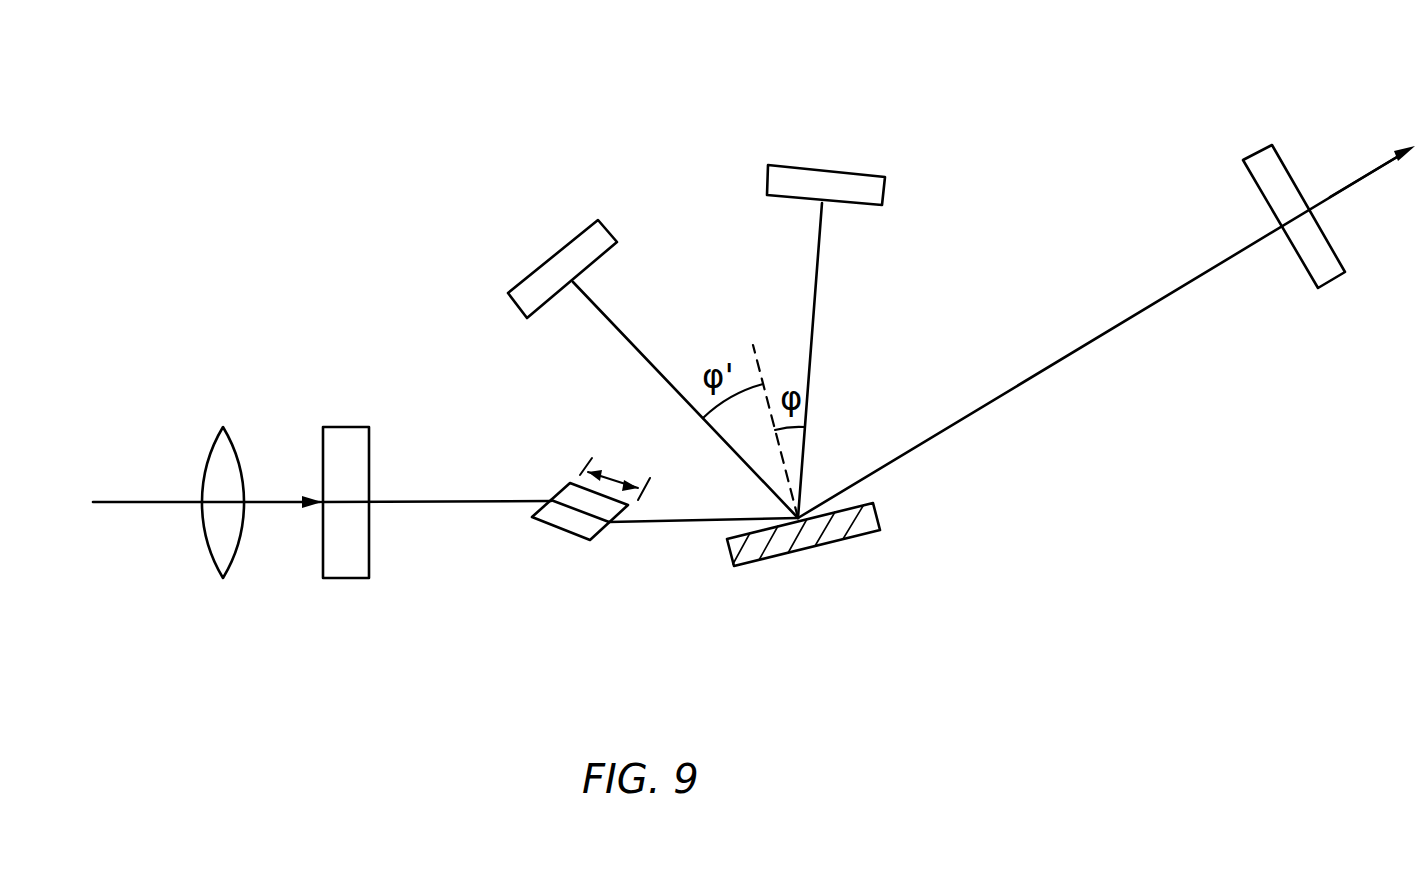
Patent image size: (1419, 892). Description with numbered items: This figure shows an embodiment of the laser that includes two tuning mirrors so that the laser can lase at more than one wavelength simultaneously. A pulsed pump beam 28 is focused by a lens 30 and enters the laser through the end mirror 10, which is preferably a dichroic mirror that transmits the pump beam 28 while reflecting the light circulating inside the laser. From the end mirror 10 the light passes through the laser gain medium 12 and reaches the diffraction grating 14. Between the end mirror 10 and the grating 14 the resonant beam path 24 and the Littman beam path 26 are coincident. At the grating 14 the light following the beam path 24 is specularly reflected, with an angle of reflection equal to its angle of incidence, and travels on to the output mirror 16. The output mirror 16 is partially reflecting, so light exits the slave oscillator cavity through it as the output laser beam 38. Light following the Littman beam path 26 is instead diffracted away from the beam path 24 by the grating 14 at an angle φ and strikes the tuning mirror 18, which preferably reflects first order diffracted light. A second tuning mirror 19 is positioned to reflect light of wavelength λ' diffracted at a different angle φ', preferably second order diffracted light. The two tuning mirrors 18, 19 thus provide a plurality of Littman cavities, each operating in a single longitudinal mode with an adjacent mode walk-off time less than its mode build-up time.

The pump beam 28 is at (142, 502).
The lens 30 is at (208, 458).
The end mirror 10 is at (370, 467).
The resonant beam path 24 is at (393, 503).
The Littman beam path 26 is at (818, 317).
The laser gain medium 12 is at (558, 490).
The diffraction grating 14 is at (847, 542).
The second tuning mirror 19 is at (575, 228).
The tuning mirror 18 is at (845, 170).
The output mirror 16 is at (1318, 288).
The output laser beam 38 is at (1370, 170).